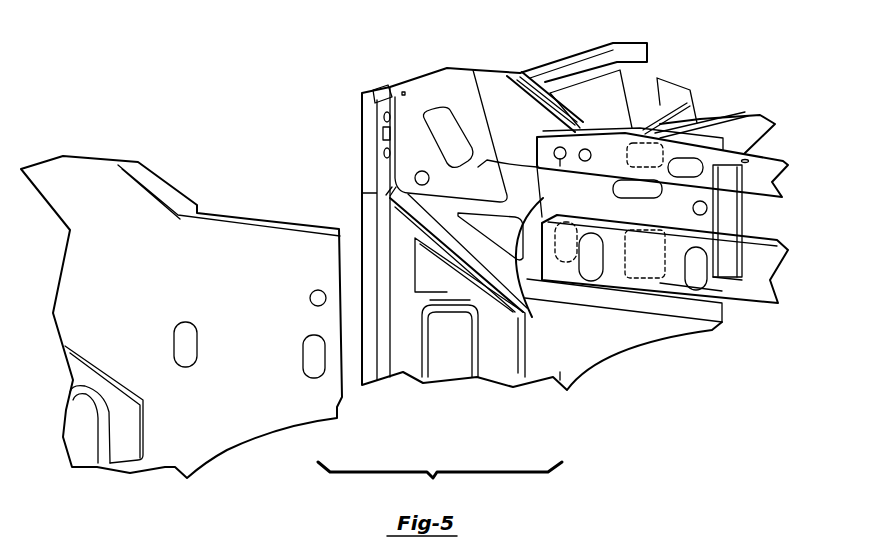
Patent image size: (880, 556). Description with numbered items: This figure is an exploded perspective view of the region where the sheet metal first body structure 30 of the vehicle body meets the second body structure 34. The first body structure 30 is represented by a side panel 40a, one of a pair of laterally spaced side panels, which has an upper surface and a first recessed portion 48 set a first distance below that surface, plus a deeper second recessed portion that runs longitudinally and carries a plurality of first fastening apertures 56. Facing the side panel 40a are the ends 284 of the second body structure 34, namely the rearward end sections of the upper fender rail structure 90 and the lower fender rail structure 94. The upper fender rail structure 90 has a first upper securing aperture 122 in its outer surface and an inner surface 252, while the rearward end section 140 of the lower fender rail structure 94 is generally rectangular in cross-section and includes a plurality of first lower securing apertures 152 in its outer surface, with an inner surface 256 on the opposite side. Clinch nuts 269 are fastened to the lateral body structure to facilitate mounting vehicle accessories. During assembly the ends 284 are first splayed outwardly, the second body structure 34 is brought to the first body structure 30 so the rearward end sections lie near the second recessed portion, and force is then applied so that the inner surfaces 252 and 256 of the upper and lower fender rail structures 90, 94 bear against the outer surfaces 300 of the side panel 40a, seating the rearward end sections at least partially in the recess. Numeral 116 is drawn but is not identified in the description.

The first body structure 30 is at (378, 78).
The ends 284 is at (532, 138).
The clinch nuts 269 is at (482, 166).
The first upper securing aperture 122 is at (677, 160).
The aperture 116 is at (693, 157).
The inner surface 252 is at (760, 160).
The second body structure 34 is at (785, 215).
The inner surface 256 is at (752, 233).
The lower fender rail structure 94 is at (762, 297).
The upper fender rail structure 90 is at (660, 201).
The outer surfaces 300 is at (544, 266).
The side panel 40a is at (447, 280).
The first recessed portion 48 is at (557, 387).
The first fastening apertures 56 is at (567, 267).
The first lower securing apertures 152 is at (597, 258).
The rearward end section 140 is at (675, 287).